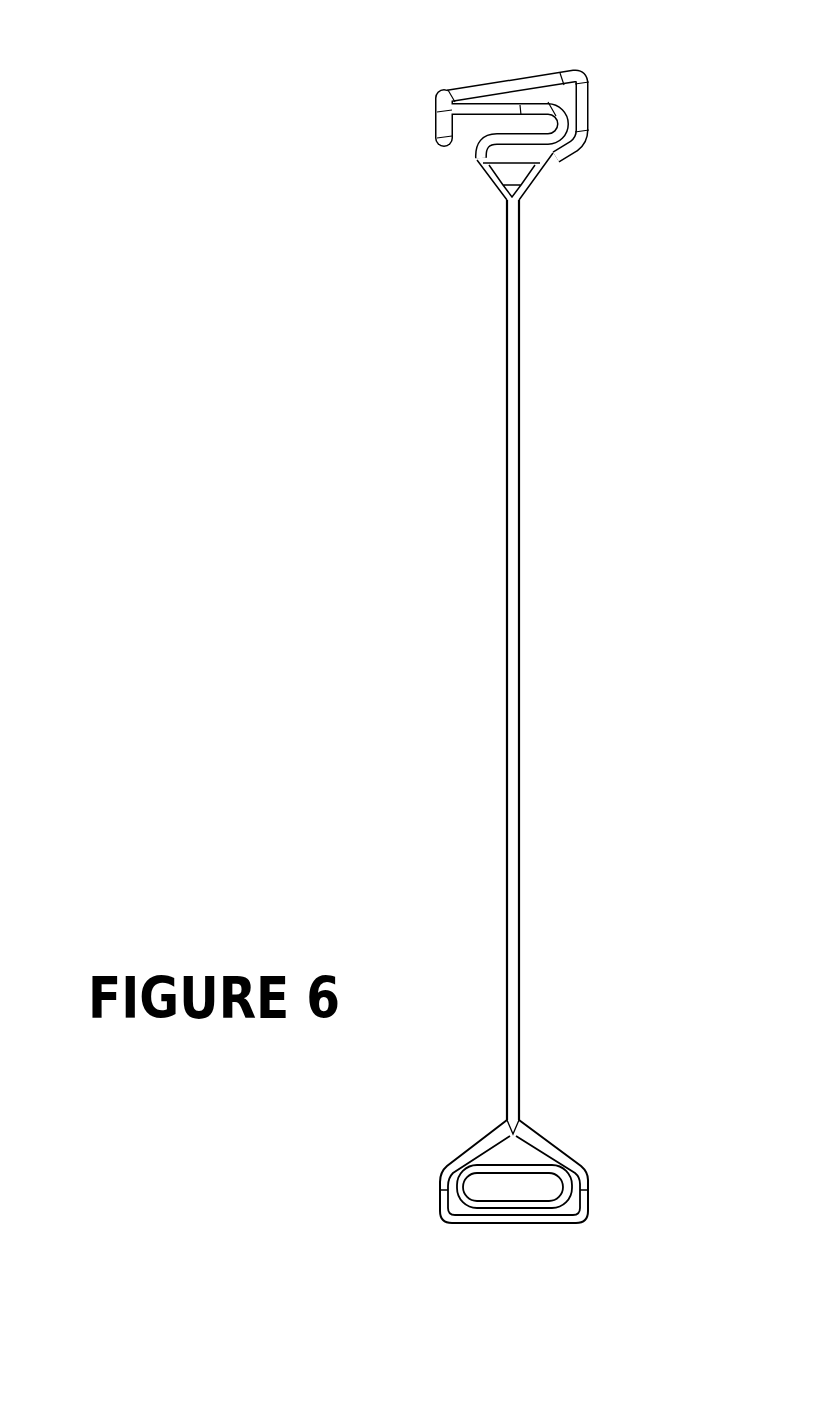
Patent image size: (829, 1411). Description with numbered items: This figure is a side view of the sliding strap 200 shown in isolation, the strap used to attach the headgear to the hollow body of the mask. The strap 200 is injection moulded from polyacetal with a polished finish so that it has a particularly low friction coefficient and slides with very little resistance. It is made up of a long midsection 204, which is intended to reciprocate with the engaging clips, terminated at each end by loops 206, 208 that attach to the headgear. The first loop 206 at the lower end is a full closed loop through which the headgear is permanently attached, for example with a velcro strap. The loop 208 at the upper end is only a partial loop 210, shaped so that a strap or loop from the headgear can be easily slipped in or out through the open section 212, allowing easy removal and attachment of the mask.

The strap 200 is at (453, 588).
The midsection 204 is at (523, 708).
The first loop 206 is at (593, 1163).
The loop 208 is at (423, 92).
The partial loop 210 is at (468, 157).
The open section 212 is at (532, 122).